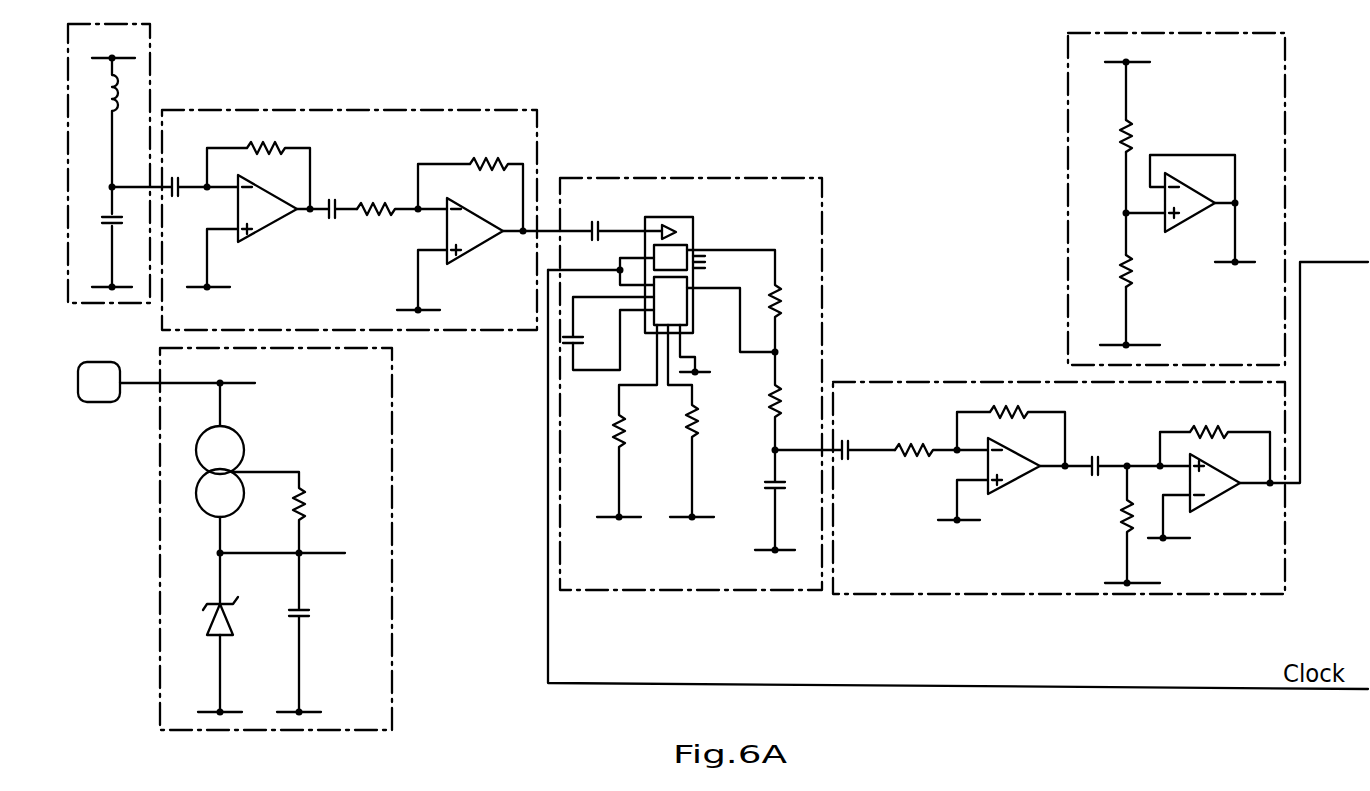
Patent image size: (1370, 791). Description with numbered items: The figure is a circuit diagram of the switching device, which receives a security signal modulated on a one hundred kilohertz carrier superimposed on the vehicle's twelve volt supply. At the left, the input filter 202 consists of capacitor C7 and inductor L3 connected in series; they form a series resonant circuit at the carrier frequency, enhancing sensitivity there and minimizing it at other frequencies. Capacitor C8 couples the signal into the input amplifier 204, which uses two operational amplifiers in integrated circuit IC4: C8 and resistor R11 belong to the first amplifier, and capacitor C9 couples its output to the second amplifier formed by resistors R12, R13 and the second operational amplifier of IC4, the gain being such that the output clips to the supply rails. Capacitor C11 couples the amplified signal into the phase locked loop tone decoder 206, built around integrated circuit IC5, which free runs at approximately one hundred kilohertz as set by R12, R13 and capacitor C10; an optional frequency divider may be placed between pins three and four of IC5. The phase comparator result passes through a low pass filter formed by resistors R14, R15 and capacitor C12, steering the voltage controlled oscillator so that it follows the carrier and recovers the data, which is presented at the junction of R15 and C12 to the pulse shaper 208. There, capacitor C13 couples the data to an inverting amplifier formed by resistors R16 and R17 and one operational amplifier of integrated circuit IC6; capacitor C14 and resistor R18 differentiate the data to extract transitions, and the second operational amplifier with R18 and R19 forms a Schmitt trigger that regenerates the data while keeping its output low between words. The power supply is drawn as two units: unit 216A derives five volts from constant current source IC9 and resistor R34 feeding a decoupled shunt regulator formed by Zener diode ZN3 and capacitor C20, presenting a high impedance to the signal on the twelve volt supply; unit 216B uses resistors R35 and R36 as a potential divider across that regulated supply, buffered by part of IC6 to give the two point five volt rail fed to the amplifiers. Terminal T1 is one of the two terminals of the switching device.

The input filter 202 is at (150, 74).
The input amplifier 204 is at (398, 110).
The phase locked loop tone decoder 206 is at (752, 178).
The pulse shaper 208 is at (902, 382).
The power supply unit 216A is at (392, 688).
The power supply unit 216B is at (1068, 114).
The terminal T1 is at (99, 402).
The inductor L3 is at (96, 122).
The capacitor C7 is at (98, 237).
The capacitor C8 is at (175, 203).
The capacitor C9 is at (337, 195).
The capacitor C10 is at (608, 325).
The capacitor C11 is at (620, 214).
The capacitor C12 is at (756, 500).
The capacitor C13 is at (835, 465).
The capacitor C14 is at (1135, 452).
The capacitor C20 is at (320, 632).
The resistor R11 is at (258, 162).
The resistor R12 is at (527, 344).
The resistor R13 is at (537, 323).
The resistor R14 is at (782, 306).
The resistor R15 is at (754, 401).
The resistor R16 is at (940, 436).
The resistor R17 is at (994, 411).
The resistor R18 is at (1110, 524).
The resistor R19 is at (1215, 440).
The resistor R34 is at (291, 512).
The resistor R35 is at (1146, 136).
The resistor R36 is at (1106, 271).
The integrated circuit IC4 is at (272, 225).
The integrated circuit IC5 is at (673, 253).
The integrated circuit IC6 is at (1019, 481).
The constant current source IC9 is at (243, 454).
The Zener diode ZN3 is at (236, 621).